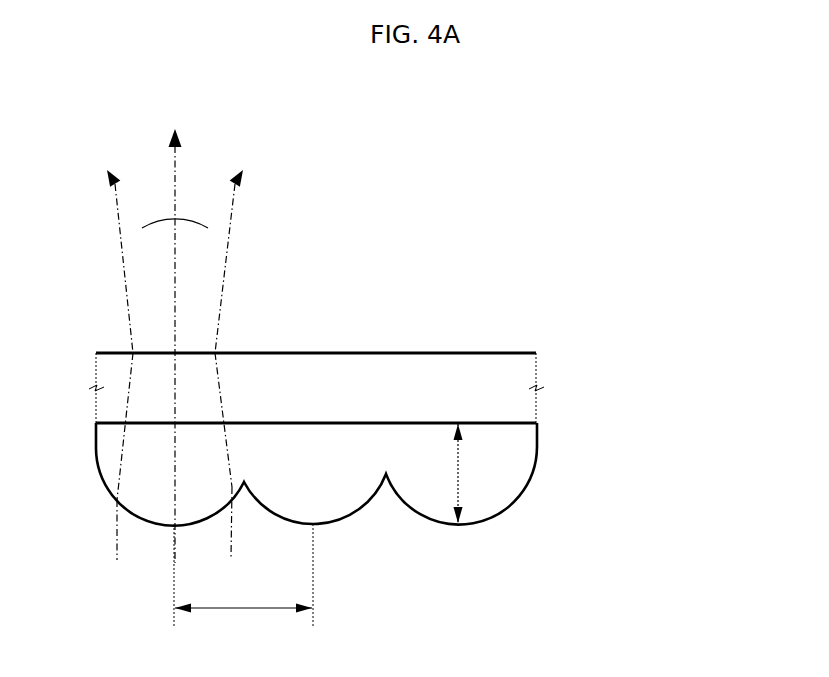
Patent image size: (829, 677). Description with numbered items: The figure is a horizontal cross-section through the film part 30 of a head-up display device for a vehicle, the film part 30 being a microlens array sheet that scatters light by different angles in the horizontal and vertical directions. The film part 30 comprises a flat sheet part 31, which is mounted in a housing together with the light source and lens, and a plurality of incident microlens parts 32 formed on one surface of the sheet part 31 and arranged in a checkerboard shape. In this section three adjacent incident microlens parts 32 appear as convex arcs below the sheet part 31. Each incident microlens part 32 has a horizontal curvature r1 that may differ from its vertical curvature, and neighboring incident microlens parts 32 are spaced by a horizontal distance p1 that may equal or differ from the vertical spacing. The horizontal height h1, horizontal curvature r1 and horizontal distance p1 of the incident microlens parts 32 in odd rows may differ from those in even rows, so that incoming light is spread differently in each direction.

The film part 30 is at (412, 439).
The sheet part 31 is at (522, 370).
The incident microlens part 32 is at (379, 474).
The horizontal height h1 is at (474, 473).
The horizontal distance p1 is at (243, 580).
The horizontal curvature r1 is at (430, 522).